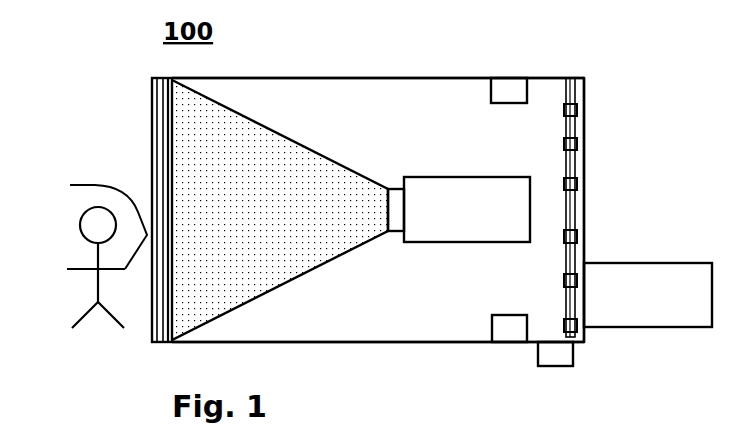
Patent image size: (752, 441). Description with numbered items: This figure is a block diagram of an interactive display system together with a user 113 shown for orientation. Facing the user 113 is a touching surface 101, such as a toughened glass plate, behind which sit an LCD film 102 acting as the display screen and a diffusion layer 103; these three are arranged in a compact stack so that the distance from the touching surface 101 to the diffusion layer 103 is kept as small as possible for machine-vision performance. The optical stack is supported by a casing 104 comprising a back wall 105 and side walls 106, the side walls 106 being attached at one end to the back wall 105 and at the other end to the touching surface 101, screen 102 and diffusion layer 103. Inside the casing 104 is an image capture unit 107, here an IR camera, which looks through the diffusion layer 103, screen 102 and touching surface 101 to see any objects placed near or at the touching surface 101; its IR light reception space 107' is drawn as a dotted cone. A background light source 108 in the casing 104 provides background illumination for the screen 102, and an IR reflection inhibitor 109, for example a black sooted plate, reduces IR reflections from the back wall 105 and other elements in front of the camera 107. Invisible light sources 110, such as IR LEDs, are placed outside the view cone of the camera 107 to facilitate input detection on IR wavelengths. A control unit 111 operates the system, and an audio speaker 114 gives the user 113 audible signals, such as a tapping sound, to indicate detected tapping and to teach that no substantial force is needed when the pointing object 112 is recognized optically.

The touching surface 101 is at (152, 88).
The LCD film 102 is at (160, 135).
The diffusion layer 103 is at (168, 183).
The casing 104 is at (280, 73).
The back wall 105 is at (588, 80).
The side walls 106 is at (362, 74).
The image capture unit 107 is at (462, 179).
The IR light reception space 107' is at (294, 210).
The background light source 108 is at (573, 107).
The IR reflection inhibitor 109 is at (572, 160).
The invisible light sources 110 is at (512, 75).
The control unit 111 is at (637, 263).
The pointing object 112 is at (81, 221).
The user 113 is at (73, 327).
The audio speaker 114 is at (548, 367).